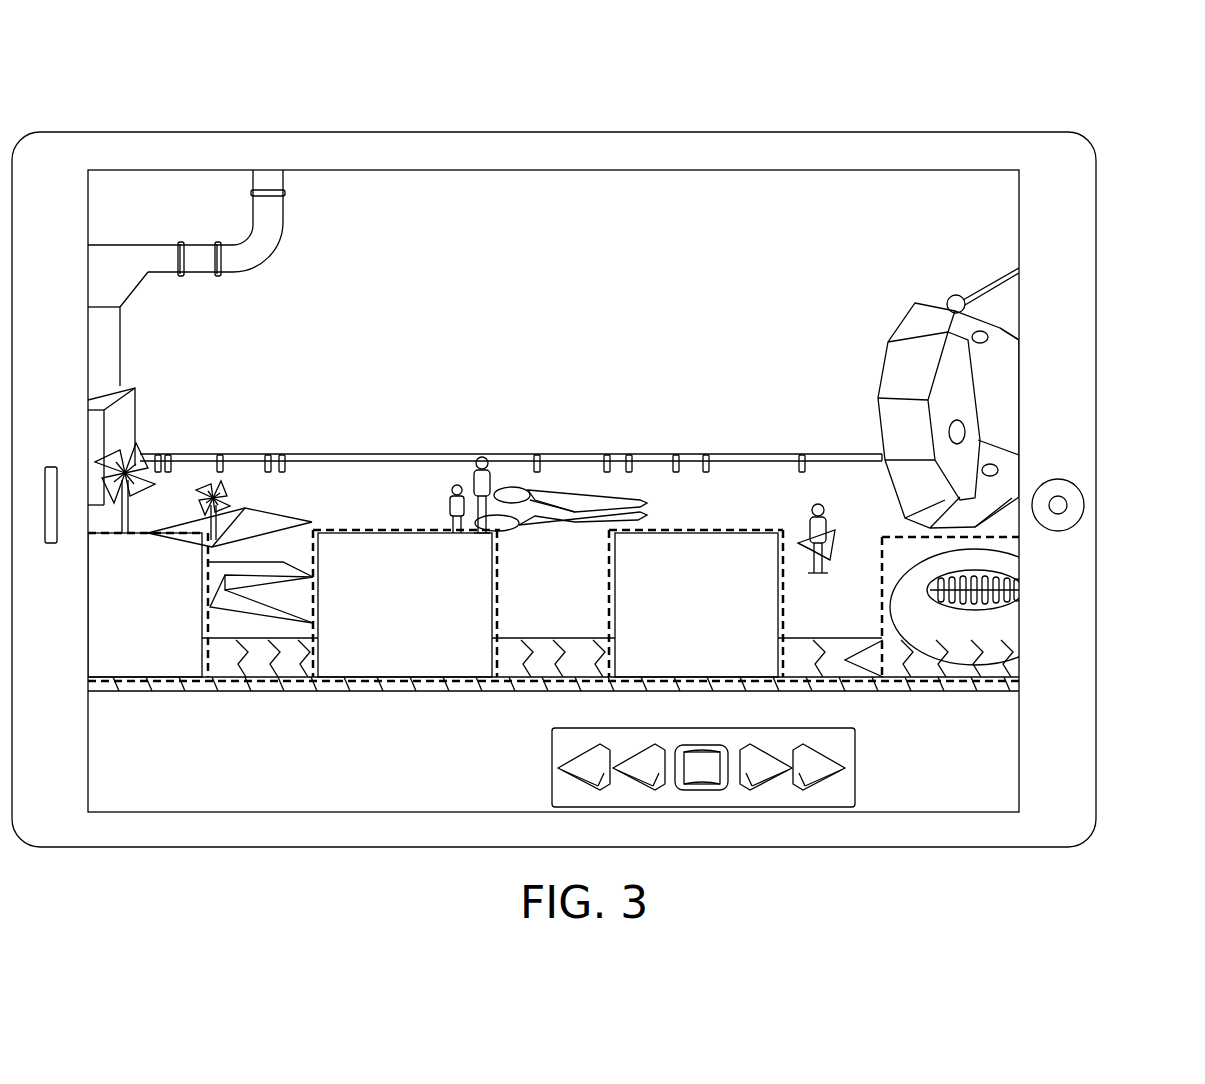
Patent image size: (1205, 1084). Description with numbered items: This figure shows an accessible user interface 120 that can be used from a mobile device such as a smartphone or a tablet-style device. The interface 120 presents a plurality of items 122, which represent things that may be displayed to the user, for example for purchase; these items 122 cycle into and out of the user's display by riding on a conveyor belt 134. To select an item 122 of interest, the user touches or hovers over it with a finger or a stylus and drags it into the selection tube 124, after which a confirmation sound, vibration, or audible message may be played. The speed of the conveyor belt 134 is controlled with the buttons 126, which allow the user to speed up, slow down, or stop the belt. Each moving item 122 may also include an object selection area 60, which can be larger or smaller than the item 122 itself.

The accessible user interface 120 is at (1105, 130).
The selection tube 124 is at (840, 337).
The items 122 is at (203, 655).
The conveyor belt 134 is at (545, 632).
The object selection area 60 is at (326, 682).
The buttons 126 is at (858, 728).